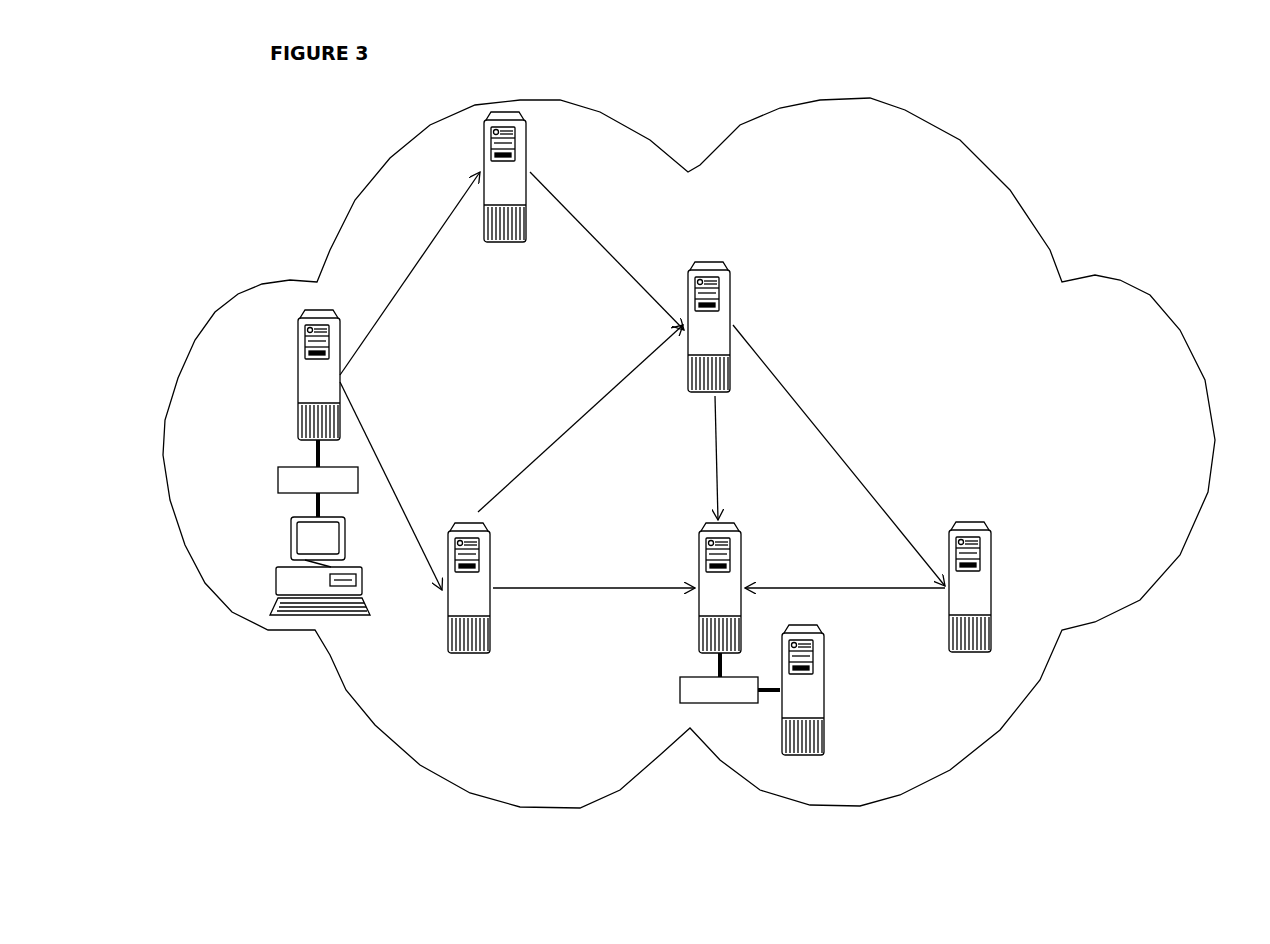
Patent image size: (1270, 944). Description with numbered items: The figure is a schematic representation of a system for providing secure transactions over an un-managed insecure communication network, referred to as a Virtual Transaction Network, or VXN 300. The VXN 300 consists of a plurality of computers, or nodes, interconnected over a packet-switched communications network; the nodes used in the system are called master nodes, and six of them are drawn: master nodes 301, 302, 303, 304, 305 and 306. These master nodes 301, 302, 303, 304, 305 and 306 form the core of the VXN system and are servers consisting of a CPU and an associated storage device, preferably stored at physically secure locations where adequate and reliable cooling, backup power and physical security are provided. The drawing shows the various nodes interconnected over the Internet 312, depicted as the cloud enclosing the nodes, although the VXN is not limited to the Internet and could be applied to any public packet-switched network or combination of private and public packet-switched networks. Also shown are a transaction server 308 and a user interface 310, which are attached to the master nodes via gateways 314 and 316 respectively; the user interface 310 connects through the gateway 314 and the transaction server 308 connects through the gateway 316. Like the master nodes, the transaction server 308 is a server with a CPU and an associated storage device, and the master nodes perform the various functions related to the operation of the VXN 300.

The Virtual Transaction Network 300 is at (843, 62).
The Internet 312 is at (918, 108).
The master node 301 is at (530, 136).
The master node 302 is at (708, 258).
The master node 303 is at (496, 550).
The master node 304 is at (746, 550).
The master node 305 is at (998, 550).
The master node 306 is at (318, 310).
The transaction server 308 is at (826, 692).
The user interface 310 is at (290, 543).
The gateway 314 is at (270, 474).
The gateway 316 is at (678, 688).